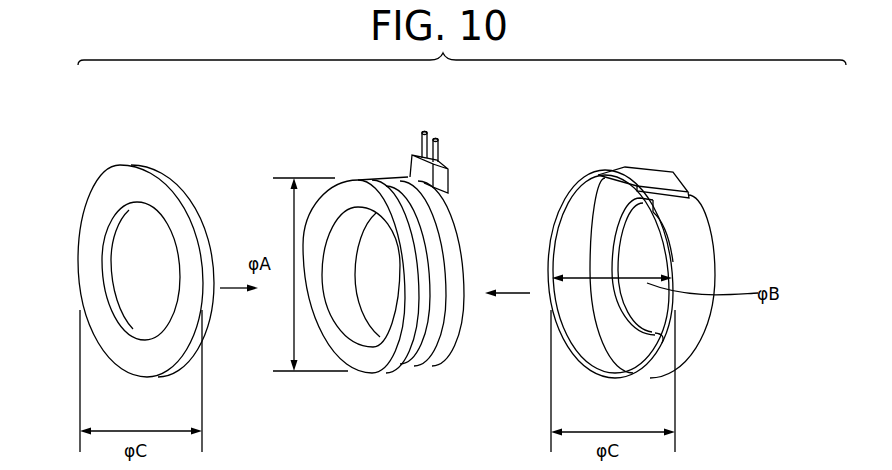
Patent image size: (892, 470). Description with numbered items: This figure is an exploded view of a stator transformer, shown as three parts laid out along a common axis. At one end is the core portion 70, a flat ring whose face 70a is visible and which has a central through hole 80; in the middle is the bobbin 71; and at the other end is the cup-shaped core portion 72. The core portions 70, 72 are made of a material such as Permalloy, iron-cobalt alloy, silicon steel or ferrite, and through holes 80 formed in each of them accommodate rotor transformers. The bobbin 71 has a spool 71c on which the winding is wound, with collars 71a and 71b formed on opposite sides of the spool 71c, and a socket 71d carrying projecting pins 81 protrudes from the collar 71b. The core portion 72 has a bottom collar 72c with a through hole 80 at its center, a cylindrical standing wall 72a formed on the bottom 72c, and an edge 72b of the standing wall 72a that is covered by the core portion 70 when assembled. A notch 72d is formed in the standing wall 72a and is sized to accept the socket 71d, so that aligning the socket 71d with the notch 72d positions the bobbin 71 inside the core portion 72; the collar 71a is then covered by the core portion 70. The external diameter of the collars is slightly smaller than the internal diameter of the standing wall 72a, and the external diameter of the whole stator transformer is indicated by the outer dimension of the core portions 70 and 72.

The core portion 70 is at (146, 228).
The front face of first ring 70a is at (133, 183).
The bobbin 71 is at (405, 257).
The collar 71a is at (378, 358).
The collar 71b is at (428, 352).
The spool 71c is at (435, 272).
The socket 71d is at (443, 186).
The core portion 72 is at (668, 229).
The cylindrical standing wall 72a is at (575, 222).
The edge of standing wall 72b is at (672, 262).
The bottom collar 72c is at (640, 377).
The notch 72d is at (668, 193).
The through hole 80 is at (148, 257).
The projecting pins 81 is at (430, 131).